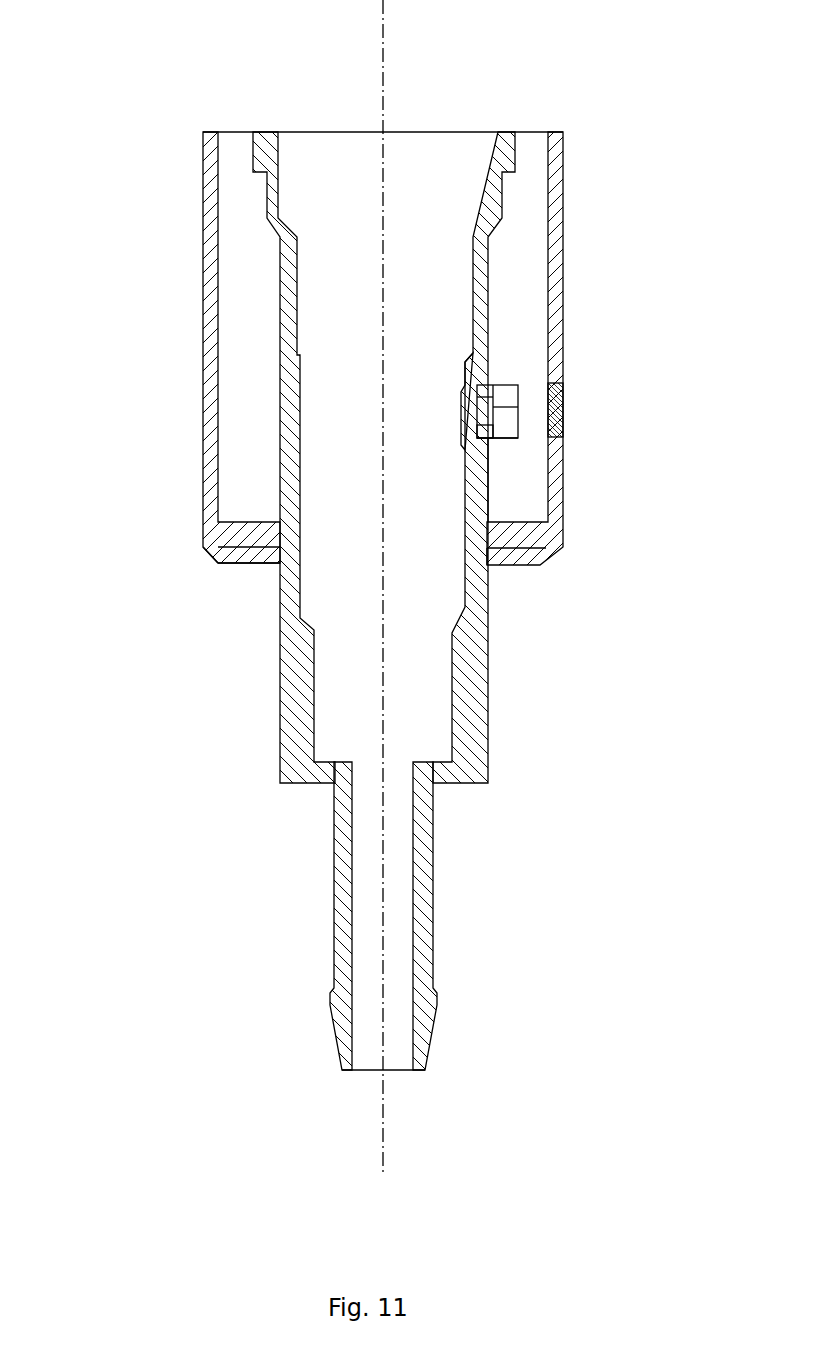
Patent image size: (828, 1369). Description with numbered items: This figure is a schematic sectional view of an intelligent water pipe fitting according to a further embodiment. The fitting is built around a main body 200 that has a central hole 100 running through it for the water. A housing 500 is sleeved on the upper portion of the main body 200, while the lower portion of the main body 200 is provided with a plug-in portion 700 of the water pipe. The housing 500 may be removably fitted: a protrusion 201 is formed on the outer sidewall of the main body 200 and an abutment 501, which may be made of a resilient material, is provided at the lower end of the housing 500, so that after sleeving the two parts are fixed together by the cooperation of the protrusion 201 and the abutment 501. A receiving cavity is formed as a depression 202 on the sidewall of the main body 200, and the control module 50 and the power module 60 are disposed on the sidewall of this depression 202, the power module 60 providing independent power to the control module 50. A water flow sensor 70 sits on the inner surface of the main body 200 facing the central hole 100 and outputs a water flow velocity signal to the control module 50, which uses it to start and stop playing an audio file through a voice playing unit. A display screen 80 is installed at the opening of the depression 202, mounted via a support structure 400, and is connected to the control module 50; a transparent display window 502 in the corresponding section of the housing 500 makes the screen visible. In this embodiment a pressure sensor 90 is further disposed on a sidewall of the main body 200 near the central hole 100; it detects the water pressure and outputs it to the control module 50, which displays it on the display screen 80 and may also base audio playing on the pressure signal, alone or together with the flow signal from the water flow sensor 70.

The central hole 100 is at (435, 263).
The main body 200 is at (278, 262).
The protrusion 201 is at (235, 562).
The depression 202 is at (505, 430).
The support structure 400 is at (482, 406).
The control module 50 is at (490, 393).
The power module 60 is at (488, 437).
The water flow sensor 70 is at (468, 390).
The display screen 80 is at (518, 413).
The pressure sensor 90 is at (507, 557).
The housing 500 is at (203, 302).
The abutment 501 is at (213, 552).
The display window 502 is at (562, 408).
The plug-in portion 700 is at (428, 932).